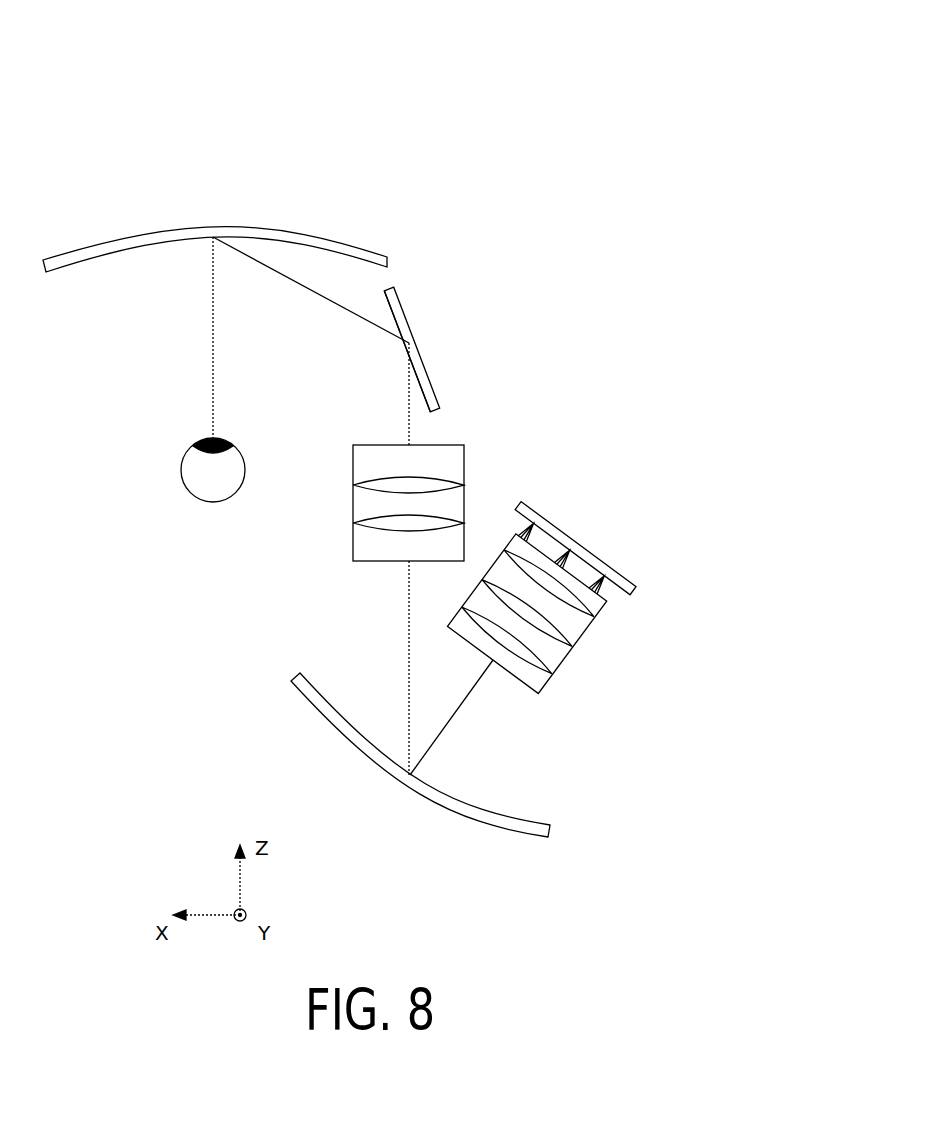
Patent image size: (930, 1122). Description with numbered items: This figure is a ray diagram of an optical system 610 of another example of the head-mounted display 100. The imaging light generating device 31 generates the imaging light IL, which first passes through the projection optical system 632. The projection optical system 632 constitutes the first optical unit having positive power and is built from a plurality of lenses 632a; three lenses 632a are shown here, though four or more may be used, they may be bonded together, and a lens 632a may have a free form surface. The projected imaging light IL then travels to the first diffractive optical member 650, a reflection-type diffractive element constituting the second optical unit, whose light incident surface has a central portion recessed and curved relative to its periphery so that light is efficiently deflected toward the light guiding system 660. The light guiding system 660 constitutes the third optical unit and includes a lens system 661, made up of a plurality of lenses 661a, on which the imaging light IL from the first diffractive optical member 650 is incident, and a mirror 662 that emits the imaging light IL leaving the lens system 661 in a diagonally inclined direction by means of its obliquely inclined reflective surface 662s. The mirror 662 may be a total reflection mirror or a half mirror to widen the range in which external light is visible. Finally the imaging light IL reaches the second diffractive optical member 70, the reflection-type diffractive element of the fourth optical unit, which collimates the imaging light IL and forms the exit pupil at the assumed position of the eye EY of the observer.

The head-mounted display 100 is at (334, 81).
The second diffractive optical member 70 is at (252, 229).
The eye EY is at (190, 471).
The imaging light IL is at (337, 304).
The optical system 610 is at (406, 211).
The light guiding system 660 is at (483, 233).
The mirror 662 is at (406, 317).
The reflecting surface 662s is at (406, 343).
The lens system 661 is at (434, 502).
The lens 661a is at (464, 522).
The projection optical system 632 is at (572, 631).
The lens 632a is at (528, 611).
The imaging light generating device 31 is at (607, 563).
The first diffractive optical member 650 is at (313, 709).